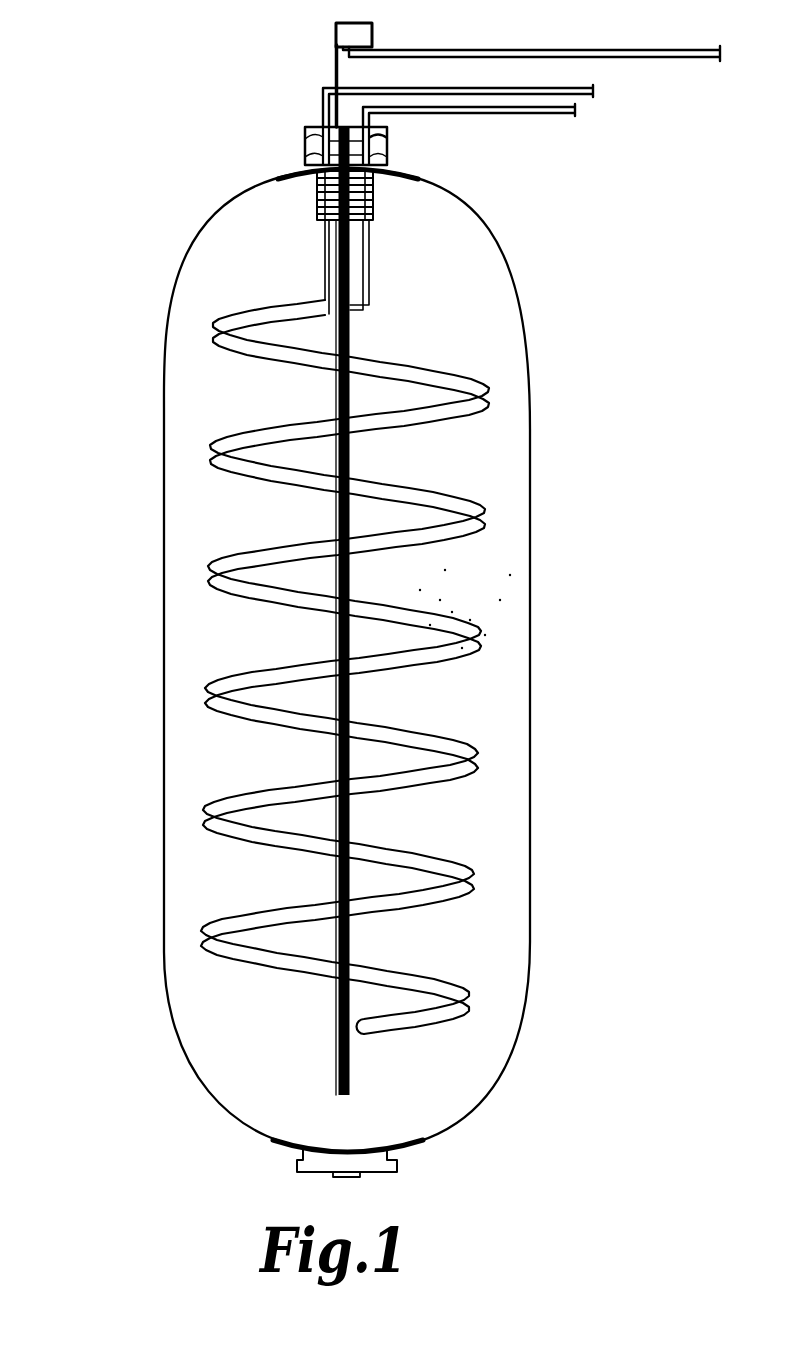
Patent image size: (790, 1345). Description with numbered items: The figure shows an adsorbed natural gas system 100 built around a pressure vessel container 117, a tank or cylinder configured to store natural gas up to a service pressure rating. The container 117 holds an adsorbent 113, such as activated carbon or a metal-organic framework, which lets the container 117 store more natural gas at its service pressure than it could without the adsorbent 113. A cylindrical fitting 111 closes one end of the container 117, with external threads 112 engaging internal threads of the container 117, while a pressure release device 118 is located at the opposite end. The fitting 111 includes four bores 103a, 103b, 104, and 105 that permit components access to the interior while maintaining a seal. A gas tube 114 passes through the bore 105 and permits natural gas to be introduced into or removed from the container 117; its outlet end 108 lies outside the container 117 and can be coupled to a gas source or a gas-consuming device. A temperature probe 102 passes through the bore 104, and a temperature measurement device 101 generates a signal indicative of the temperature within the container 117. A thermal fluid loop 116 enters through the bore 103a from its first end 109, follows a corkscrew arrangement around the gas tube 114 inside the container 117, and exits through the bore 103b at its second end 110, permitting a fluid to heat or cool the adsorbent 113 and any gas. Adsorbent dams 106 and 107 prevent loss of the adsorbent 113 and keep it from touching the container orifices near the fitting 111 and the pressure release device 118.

The ANG system 100 is at (114, 522).
The temperature measurement device 101 is at (373, 36).
The temperature probe 102 is at (333, 1070).
The bore 103a is at (312, 127).
The bore 103b is at (388, 137).
The bore 104 is at (305, 156).
The bore 105 is at (388, 159).
The adsorbent dam 106 is at (278, 170).
The adsorbent dam 107 is at (280, 1141).
The outlet end 108 is at (540, 52).
The first end 109 is at (587, 93).
The second end 110 is at (545, 113).
The fitting 111 is at (305, 133).
The external threads 112 is at (378, 210).
The adsorbent 113 is at (467, 586).
The gas tube 114 is at (398, 685).
The thermal fluid loop 116 is at (466, 888).
The pressure vessel container 117 is at (481, 1096).
The pressure release device 118 is at (397, 1170).